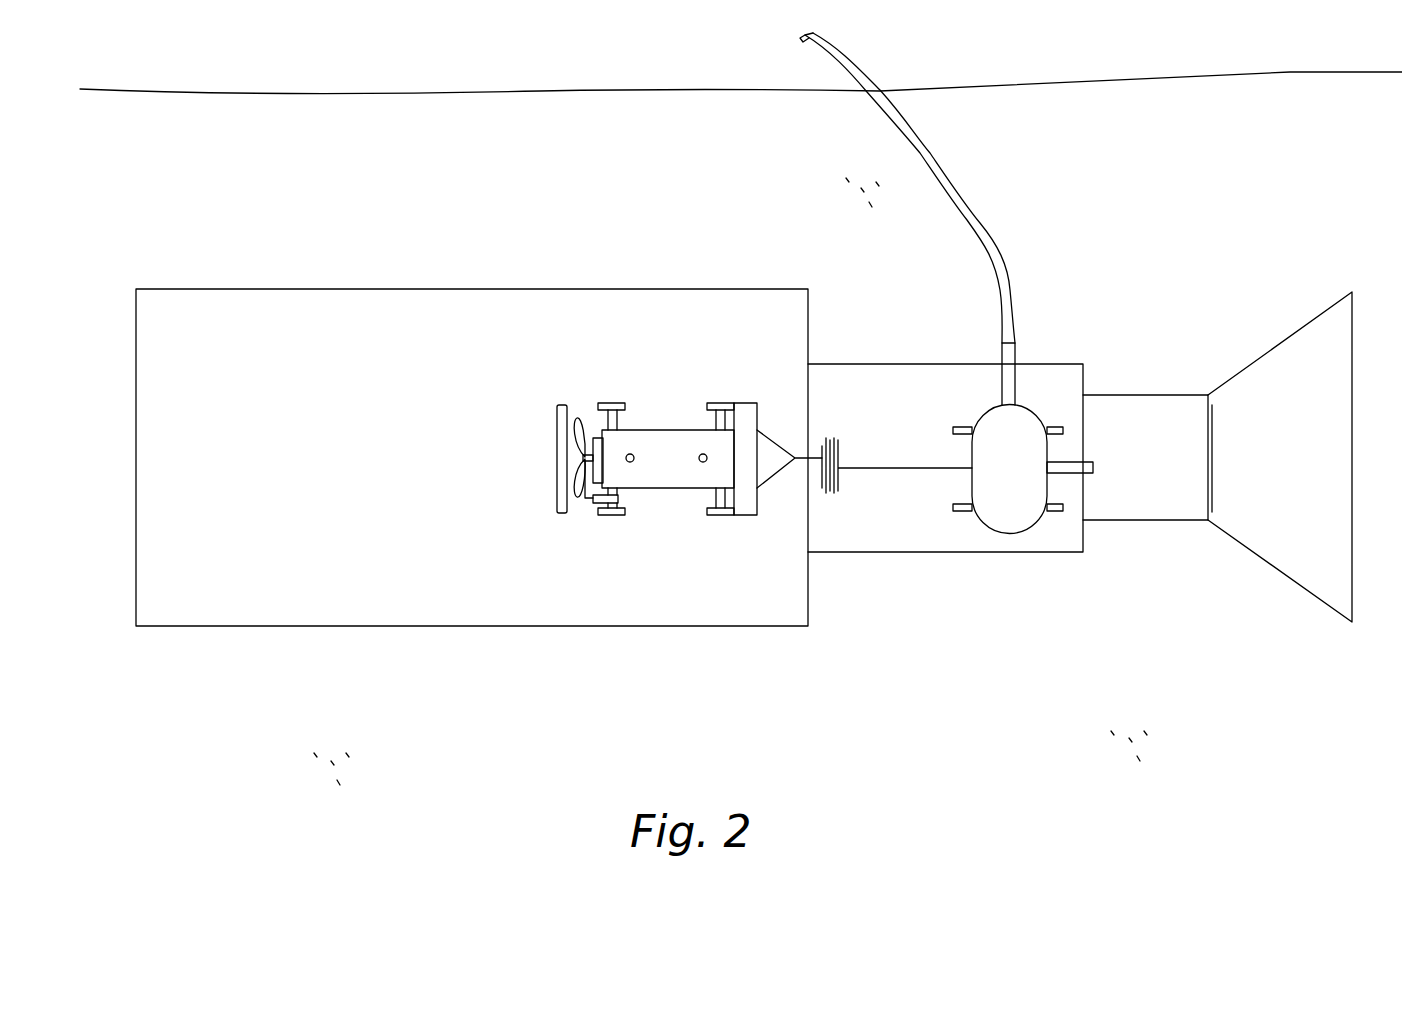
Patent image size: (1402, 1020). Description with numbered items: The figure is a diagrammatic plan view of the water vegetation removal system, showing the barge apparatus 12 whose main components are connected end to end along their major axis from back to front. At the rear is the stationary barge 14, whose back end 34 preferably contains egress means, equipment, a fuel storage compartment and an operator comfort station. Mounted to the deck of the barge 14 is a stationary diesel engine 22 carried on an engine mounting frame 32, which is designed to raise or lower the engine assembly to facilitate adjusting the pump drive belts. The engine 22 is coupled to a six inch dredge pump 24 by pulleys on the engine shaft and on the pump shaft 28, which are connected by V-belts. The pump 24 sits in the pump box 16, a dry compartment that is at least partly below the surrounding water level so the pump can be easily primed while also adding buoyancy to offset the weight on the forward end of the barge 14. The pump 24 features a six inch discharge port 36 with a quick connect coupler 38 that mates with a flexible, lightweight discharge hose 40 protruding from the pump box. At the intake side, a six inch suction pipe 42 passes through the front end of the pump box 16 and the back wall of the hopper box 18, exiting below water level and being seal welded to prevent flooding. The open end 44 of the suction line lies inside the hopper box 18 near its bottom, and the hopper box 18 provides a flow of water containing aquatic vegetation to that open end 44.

The barge apparatus 12 is at (744, 452).
The stationary barge 14 is at (478, 312).
The pump box 16 is at (872, 552).
The hopper box 18 is at (1148, 395).
The stationary diesel engine 22 is at (720, 403).
The dredge pump 24 is at (1000, 518).
The pump shaft 28 is at (876, 468).
The engine mounting frame 32 is at (612, 403).
The back end of the barge 34 is at (218, 392).
The discharge port 36 is at (1017, 377).
The quick connect coupler 38 is at (1002, 343).
The discharge hose 40 is at (938, 173).
The suction pipe 42 is at (1083, 442).
The open end of pump suction line 44 is at (1093, 473).